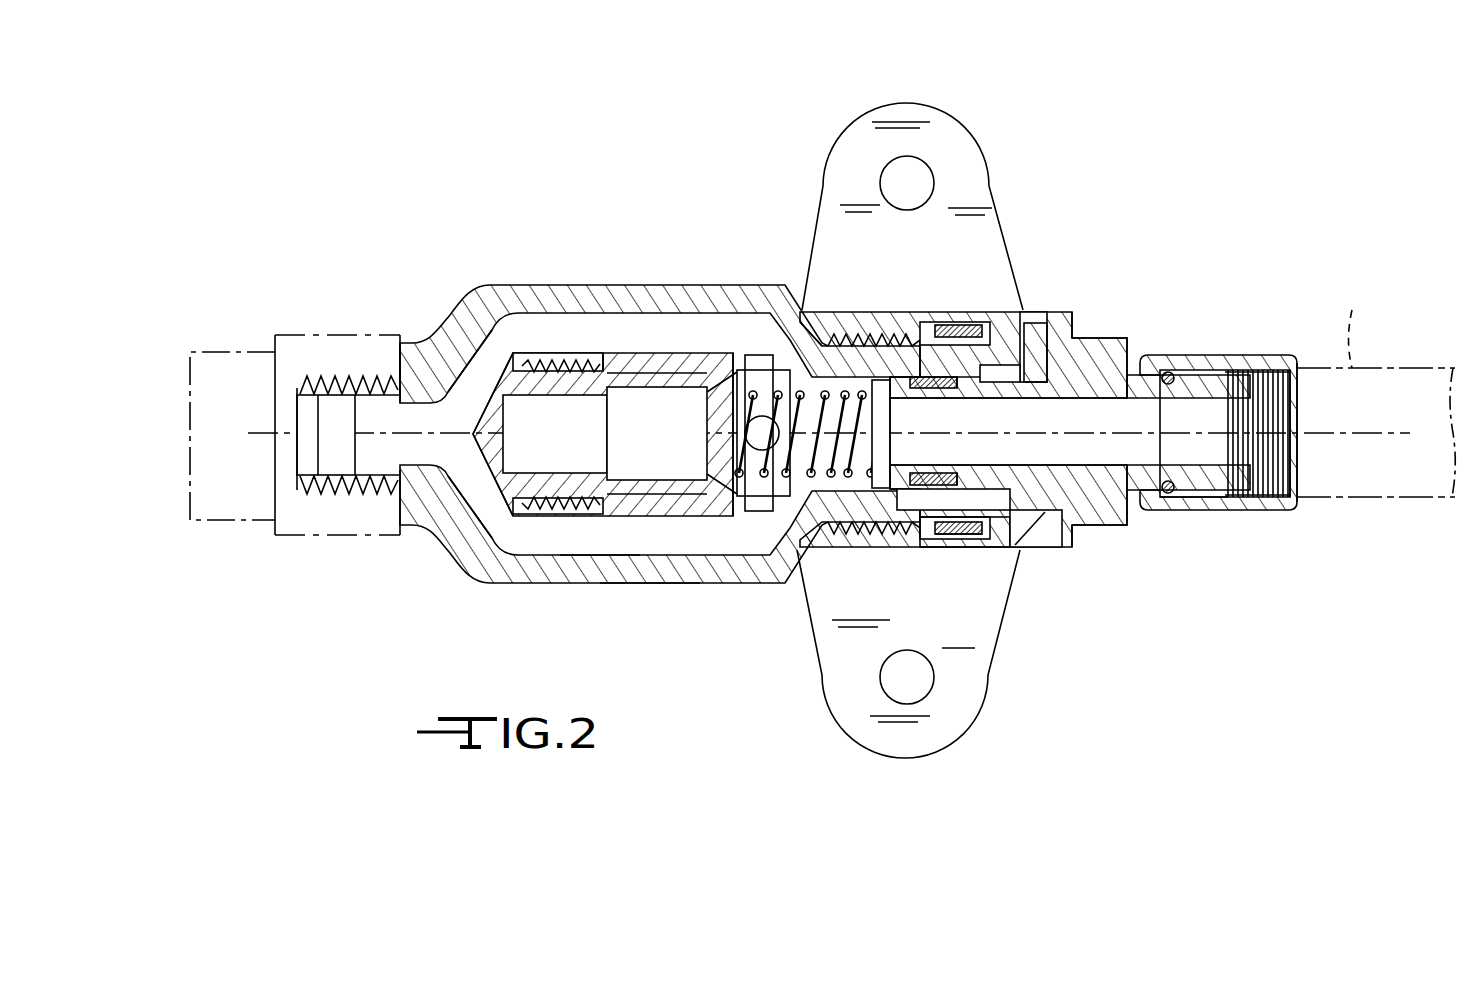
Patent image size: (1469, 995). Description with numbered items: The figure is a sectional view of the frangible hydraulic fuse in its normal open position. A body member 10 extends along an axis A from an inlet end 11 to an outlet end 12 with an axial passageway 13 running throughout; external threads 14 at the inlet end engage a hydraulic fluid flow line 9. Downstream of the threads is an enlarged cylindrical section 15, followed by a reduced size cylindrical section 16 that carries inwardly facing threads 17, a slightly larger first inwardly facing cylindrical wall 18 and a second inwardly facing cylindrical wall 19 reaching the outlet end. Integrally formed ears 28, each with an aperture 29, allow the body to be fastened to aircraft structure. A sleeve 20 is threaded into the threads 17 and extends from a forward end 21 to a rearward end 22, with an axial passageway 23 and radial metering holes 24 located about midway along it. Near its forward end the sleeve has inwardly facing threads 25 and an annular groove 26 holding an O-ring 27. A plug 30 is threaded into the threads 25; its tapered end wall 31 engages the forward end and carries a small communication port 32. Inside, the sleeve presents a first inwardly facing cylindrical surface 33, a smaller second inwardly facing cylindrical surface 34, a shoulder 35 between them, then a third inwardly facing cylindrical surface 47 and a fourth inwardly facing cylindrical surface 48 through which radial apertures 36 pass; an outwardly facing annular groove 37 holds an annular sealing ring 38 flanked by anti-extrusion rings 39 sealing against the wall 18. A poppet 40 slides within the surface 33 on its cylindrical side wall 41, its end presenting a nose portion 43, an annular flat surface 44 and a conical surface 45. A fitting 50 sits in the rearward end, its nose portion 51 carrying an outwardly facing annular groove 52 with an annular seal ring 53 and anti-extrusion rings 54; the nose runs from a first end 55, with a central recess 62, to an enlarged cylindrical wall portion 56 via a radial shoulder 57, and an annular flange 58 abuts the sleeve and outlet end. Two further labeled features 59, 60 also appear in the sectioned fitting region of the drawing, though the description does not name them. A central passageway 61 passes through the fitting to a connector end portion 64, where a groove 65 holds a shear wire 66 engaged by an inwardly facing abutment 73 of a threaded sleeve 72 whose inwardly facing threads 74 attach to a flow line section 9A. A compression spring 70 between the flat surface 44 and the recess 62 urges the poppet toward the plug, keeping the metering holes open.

The hydraulic fluid flow line 9 is at (238, 522).
The hydraulic fluid flow line section 9A is at (1375, 324).
The body member 10 is at (682, 280).
The inlet end 11 is at (297, 388).
The outlet end 12 is at (1080, 318).
The axial passageway 13 is at (508, 584).
The external threads 14 is at (342, 372).
The enlarged cylindrical section 15 is at (655, 584).
The reduced size cylindrical section 16 is at (880, 313).
The inwardly facing threads 17 is at (833, 550).
The first inwardly facing cylindrical wall 18 is at (992, 548).
The second inwardly facing cylindrical wall 19 is at (1045, 550).
The sleeve 20 is at (680, 342).
The forward end 21 is at (528, 352).
The rearward end 22 is at (1055, 528).
The axial passageway 23 is at (775, 520).
The metering holes 24 is at (755, 362).
The inwardly facing threads 25 is at (580, 358).
The annular groove 26 is at (604, 352).
The O-ring 27 is at (598, 492).
The ears 28 is at (975, 186).
The aperture 29 is at (918, 178).
The plug 30 is at (490, 358).
The end wall 31 is at (462, 540).
The communication port 32 is at (478, 432).
The first inwardly facing cylindrical surface 33 is at (660, 500).
The second inwardly facing cylindrical surface 34 is at (858, 312).
The shoulder 35 is at (838, 318).
The radial apertures 36 is at (1070, 330).
The outwardly facing annular groove 37 is at (937, 325).
The annular sealing ring 38 is at (952, 548).
The anti-extrusion rings 39 is at (968, 325).
The poppet 40 is at (592, 574).
The cylindrical side wall 41 is at (637, 378).
The nose portion 43 is at (748, 428).
The annular flat surface 44 is at (755, 500).
The conical surface 45 is at (733, 520).
The third inwardly facing cylindrical surface 47 is at (1005, 399).
The fourth inwardly facing cylindrical surface 48 is at (992, 515).
The fitting 50 is at (1138, 548).
The nose portion 51 is at (897, 378).
The outwardly facing annular groove 52 is at (990, 390).
The annular seal ring 53 is at (948, 480).
The anti-extrusion rings 54 is at (940, 376).
The first end 55 is at (875, 540).
The enlarged cylindrical wall portion 56 is at (1035, 500).
The radial shoulder 57 is at (1000, 350).
The annular flange 58 is at (1062, 548).
The passage 59 is at (1087, 399).
The key slot 60 is at (1035, 310).
The central passageway 61 is at (1205, 365).
The central recess 62 is at (938, 392).
The connector end portion 64 is at (1208, 512).
The groove 65 is at (1165, 390).
The shear wire 66 is at (1165, 478).
The compression spring 70 is at (756, 520).
The threaded sleeve 72 is at (1252, 355).
The inwardly facing abutment 73 is at (1168, 370).
The inwardly facing threads 74 is at (1280, 512).
The axis A is at (1363, 433).